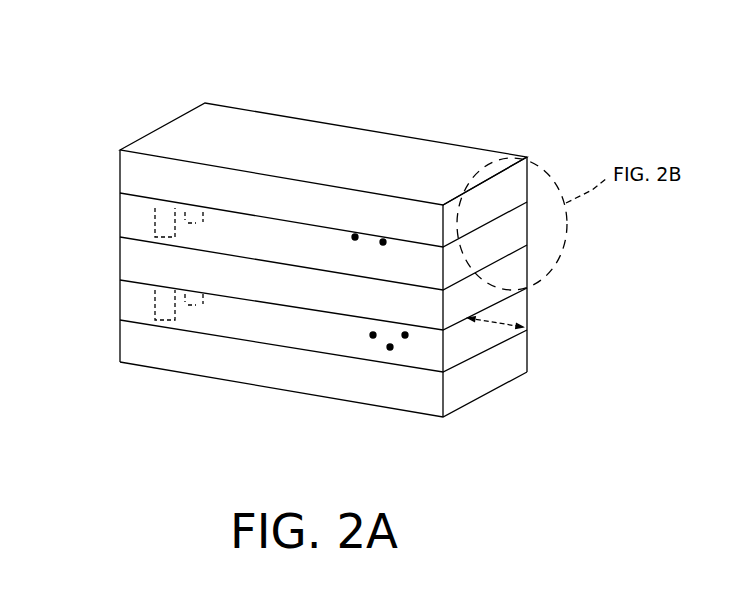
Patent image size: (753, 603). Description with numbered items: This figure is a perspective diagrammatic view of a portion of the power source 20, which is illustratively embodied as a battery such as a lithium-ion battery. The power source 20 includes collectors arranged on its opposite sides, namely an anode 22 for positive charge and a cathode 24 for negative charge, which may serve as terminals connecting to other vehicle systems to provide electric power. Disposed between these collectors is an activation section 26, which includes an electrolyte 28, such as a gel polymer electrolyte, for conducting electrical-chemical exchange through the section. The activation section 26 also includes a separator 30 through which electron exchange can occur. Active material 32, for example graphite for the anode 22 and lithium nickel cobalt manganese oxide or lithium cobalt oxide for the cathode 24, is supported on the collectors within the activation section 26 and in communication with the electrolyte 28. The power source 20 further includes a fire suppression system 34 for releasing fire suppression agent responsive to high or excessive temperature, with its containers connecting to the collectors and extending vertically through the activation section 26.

The power source 20 is at (138, 92).
The anode 22 is at (270, 132).
The cathode 24 is at (243, 372).
The activation section 26 is at (120, 320).
The electrolyte 28 is at (334, 260).
The separator 30 is at (481, 302).
The active material 32 is at (383, 226).
The fire suppression system 34 is at (141, 228).